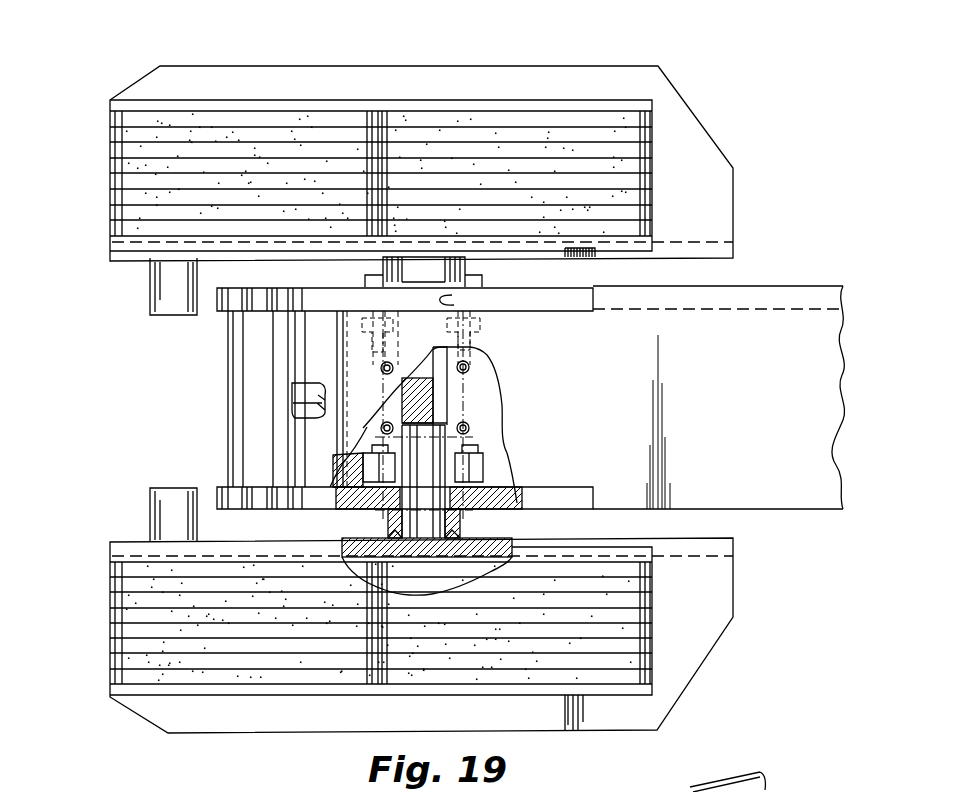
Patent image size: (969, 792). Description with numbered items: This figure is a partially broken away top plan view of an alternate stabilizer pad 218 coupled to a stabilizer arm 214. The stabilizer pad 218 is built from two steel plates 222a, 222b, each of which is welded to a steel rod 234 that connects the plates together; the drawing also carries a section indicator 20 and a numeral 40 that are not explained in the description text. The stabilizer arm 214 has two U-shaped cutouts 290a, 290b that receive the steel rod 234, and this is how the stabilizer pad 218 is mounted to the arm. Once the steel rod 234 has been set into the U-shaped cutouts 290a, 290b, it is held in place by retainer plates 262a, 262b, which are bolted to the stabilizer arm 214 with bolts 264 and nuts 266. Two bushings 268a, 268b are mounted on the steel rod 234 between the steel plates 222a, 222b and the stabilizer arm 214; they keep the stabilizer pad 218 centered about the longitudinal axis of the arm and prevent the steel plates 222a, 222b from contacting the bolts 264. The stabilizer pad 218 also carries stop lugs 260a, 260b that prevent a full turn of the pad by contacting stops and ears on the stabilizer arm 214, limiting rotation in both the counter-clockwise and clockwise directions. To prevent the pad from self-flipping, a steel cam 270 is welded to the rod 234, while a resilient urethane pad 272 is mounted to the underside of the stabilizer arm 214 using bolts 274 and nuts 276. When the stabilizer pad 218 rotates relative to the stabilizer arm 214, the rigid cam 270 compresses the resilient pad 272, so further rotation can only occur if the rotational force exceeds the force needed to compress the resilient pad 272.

The section line 20- 20 is at (58, 398).
The panel 40 is at (112, 160).
The stabilizer arm 214 is at (797, 282).
The stabilizer pad 218 is at (736, 152).
The steel plate 222a is at (702, 655).
The steel plate 222b is at (696, 118).
The steel rod 234 is at (447, 425).
The stop lug 260a is at (180, 488).
The stop lug 260b is at (180, 318).
The retainer plate 262a is at (495, 488).
The retainer plate 262b is at (520, 323).
The bolts 264 is at (472, 520).
The nuts 266 is at (483, 465).
The bushing 268a is at (473, 560).
The bushing 268b is at (470, 270).
The steel cam 270 is at (433, 400).
The resilient urethane pad 272 is at (488, 383).
The bolts 274 is at (380, 367).
The nuts 276 is at (350, 340).
The U-shaped cutout 290a is at (362, 450).
The U-shaped cutout 290b is at (482, 302).